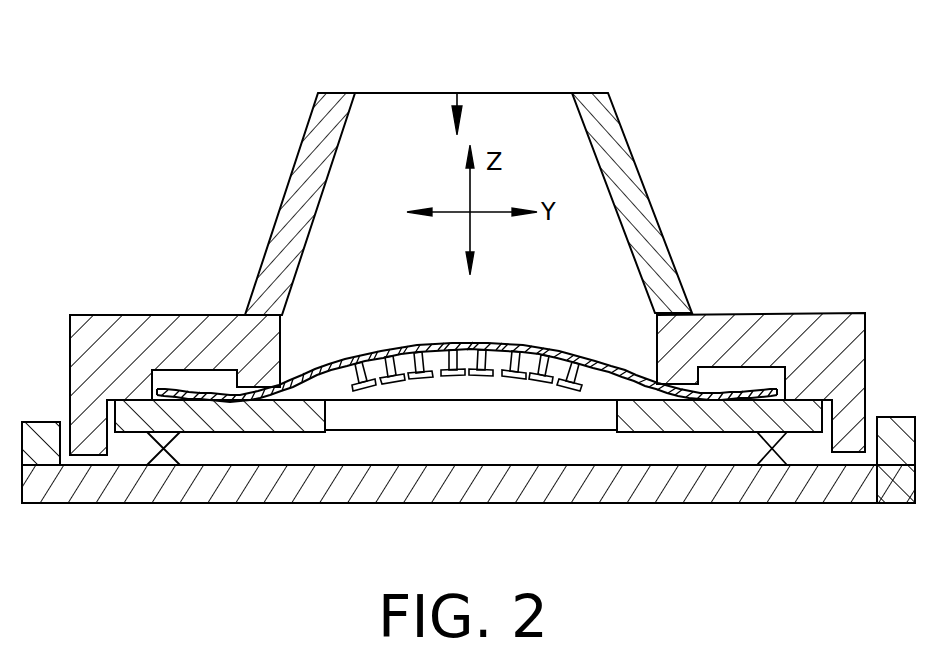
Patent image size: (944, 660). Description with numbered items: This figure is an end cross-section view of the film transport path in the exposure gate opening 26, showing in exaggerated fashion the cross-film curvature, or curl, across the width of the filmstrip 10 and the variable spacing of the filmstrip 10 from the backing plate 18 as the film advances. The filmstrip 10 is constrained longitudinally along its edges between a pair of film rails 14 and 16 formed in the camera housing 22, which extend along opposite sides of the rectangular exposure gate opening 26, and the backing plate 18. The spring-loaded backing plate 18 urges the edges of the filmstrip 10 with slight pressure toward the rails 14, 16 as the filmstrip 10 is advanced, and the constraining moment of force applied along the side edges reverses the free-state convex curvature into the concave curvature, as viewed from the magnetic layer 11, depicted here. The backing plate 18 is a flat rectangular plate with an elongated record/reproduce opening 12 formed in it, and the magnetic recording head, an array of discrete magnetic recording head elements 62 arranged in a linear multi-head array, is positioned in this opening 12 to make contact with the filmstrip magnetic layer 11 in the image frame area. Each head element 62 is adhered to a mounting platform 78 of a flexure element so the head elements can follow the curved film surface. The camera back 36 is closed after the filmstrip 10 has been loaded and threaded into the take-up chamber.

The filmstrip 10 is at (460, 318).
The magnetic layer 11 is at (620, 402).
The record/reproduce opening 12 is at (377, 428).
The film rail 14 is at (285, 385).
The film rail 16 is at (653, 375).
The backing plate 18 is at (738, 415).
The camera housing 22 is at (822, 318).
The exposure gate opening 26 is at (457, 93).
The camera back 36 is at (518, 497).
The magnetic recording head elements 62 is at (581, 282).
The mounting platform 78 is at (507, 392).